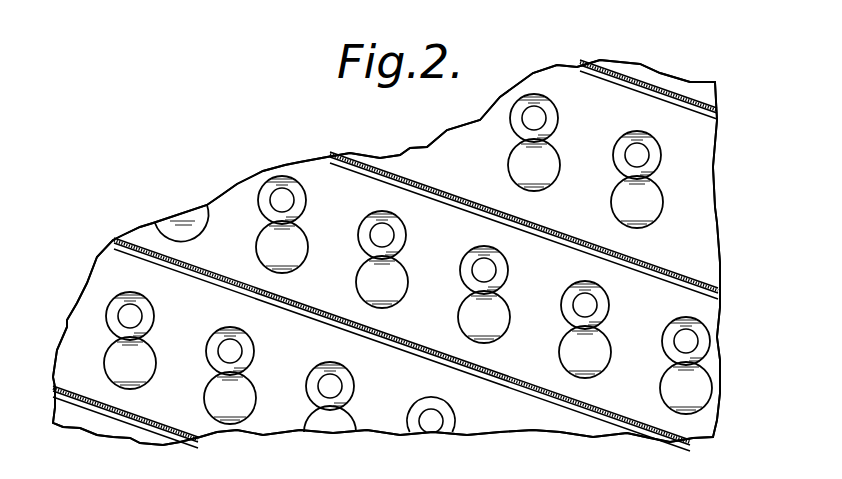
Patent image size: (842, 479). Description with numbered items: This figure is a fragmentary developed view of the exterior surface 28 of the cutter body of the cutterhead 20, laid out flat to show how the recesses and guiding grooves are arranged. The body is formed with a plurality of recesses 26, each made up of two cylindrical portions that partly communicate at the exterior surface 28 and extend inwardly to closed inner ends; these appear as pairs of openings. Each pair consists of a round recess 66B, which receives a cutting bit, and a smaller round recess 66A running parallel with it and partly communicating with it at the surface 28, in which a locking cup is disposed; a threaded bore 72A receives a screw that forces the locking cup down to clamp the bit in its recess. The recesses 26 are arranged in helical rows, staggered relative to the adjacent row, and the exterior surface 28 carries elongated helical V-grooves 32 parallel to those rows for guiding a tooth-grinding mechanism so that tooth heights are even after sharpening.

The cutterhead 20 is at (723, 258).
The recess 26 is at (656, 177).
The exterior surface 28 is at (683, 209).
The helical V-groove 32 is at (384, 168).
The round recess 66A is at (622, 135).
The round recess 66B is at (614, 188).
The threaded bore 72A is at (288, 199).